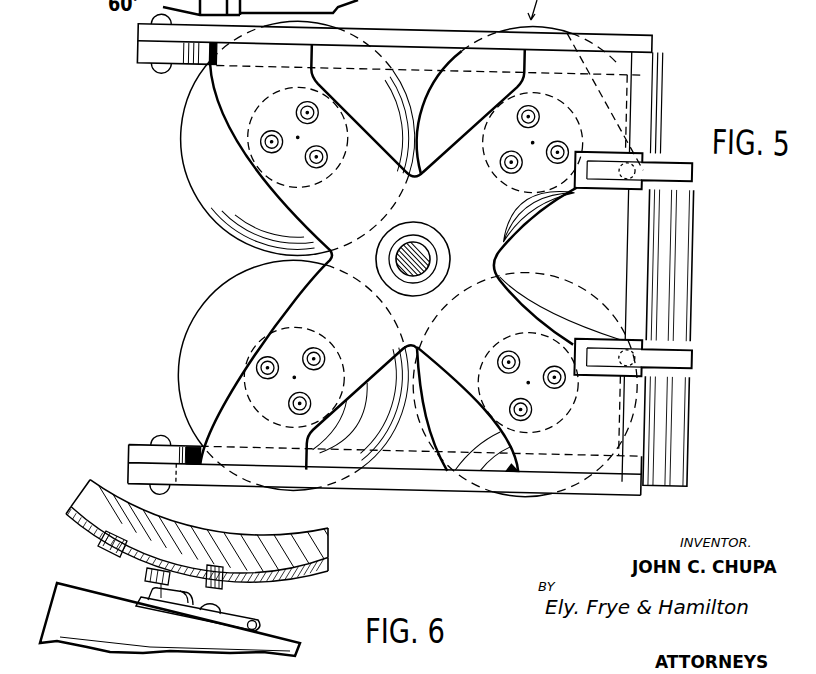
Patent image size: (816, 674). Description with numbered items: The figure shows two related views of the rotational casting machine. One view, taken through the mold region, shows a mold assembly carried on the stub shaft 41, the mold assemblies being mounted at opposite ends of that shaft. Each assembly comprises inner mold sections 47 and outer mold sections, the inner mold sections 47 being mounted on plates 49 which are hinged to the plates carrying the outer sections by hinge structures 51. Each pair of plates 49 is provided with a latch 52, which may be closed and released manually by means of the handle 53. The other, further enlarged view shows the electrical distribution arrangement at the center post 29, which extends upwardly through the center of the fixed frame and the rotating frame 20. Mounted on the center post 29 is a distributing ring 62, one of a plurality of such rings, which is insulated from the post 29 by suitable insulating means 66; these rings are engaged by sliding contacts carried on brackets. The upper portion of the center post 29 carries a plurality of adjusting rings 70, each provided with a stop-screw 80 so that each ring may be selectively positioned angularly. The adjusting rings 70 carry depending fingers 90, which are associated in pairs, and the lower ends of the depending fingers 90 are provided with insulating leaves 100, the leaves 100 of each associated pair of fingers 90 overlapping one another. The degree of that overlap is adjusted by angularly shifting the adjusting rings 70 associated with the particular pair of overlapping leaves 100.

In FIG. 5, the rotating frame 20 is at (345, 9).
In FIG. 6, the center post 29 is at (247, 562).
In FIG. 5, the stub shaft 41 is at (419, 247).
In FIG. 5, the inner mold sections 47 is at (240, 285).
In FIG. 5, the plates 49 is at (468, 369).
In FIG. 5, the hinge structures 51 is at (157, 78).
In FIG. 5, the latch 52 is at (679, 354).
In FIG. 5, the handle 53 is at (668, 261).
In FIG. 6, the distributing ring 62 is at (68, 518).
In FIG. 6, the insulating means 66 is at (80, 485).
In FIG. 6, the adjusting rings 70 is at (143, 547).
In FIG. 6, the stop-screw 80 is at (104, 548).
In FIG. 6, the depending fingers 90 is at (151, 575).
In FIG. 6, the insulating leaves 100 is at (157, 578).